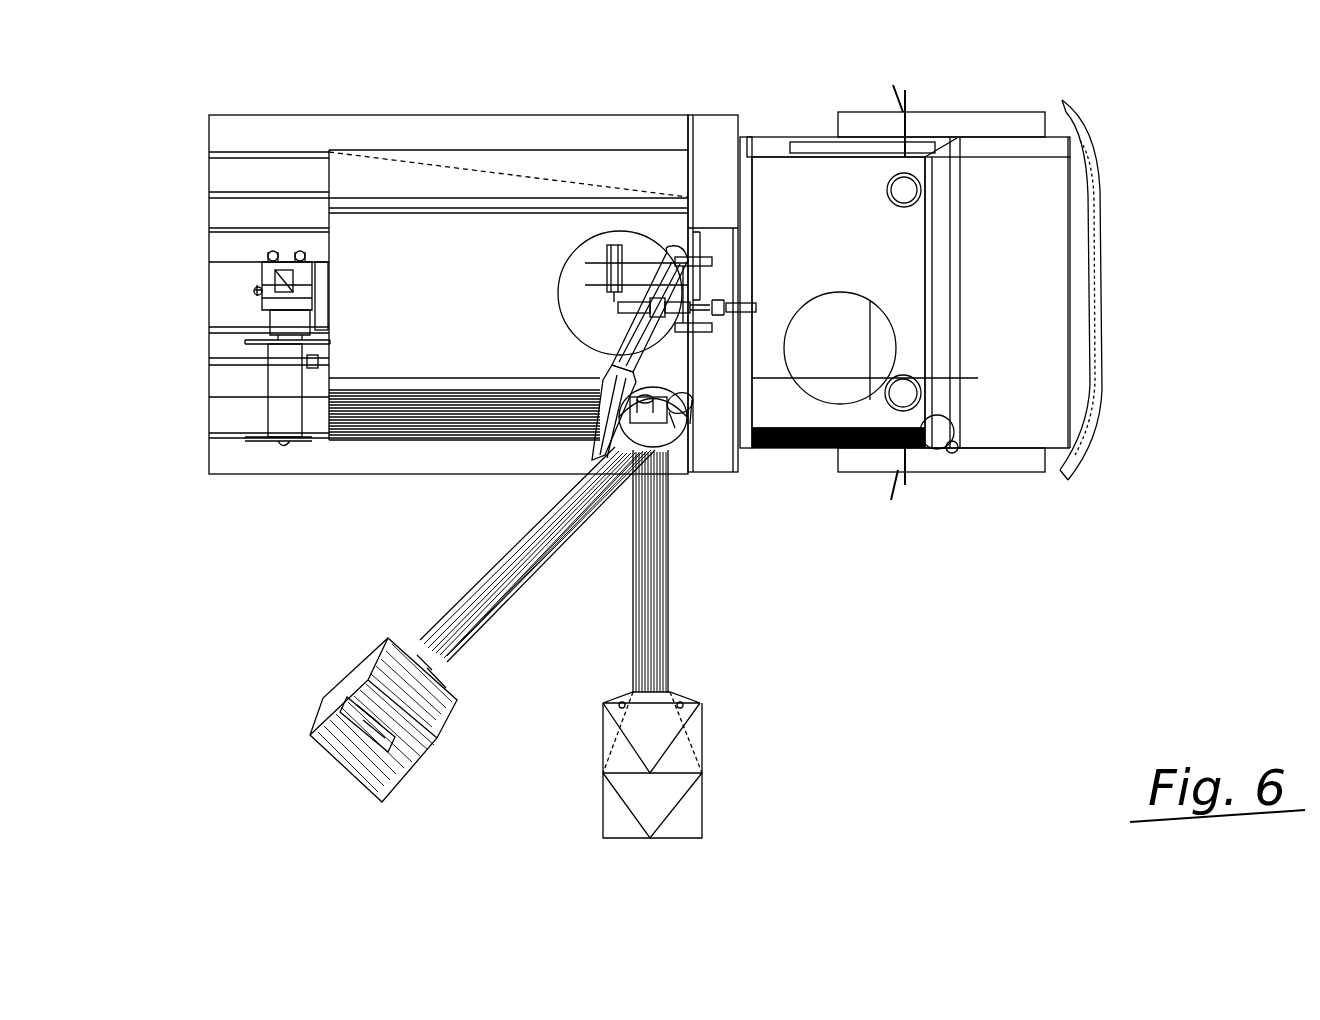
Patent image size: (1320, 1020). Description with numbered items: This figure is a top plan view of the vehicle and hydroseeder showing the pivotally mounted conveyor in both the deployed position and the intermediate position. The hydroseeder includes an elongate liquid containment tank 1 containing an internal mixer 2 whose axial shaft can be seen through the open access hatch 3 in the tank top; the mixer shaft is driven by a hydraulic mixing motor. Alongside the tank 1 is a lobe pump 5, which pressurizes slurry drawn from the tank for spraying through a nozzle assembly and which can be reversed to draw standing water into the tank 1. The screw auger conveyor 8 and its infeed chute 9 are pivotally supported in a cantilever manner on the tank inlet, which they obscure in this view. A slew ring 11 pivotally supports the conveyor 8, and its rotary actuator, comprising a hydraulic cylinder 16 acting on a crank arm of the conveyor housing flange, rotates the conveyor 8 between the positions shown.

The liquid containment tank 1 is at (515, 115).
The internal mixer 2 is at (588, 287).
The access hatch 3 is at (631, 232).
The lobe pump 5 is at (255, 289).
The conveyor 8 is at (485, 582).
The infeed chute 9 is at (408, 777).
The slew ring 11 is at (685, 447).
The hydraulic cylinder 16 is at (707, 353).